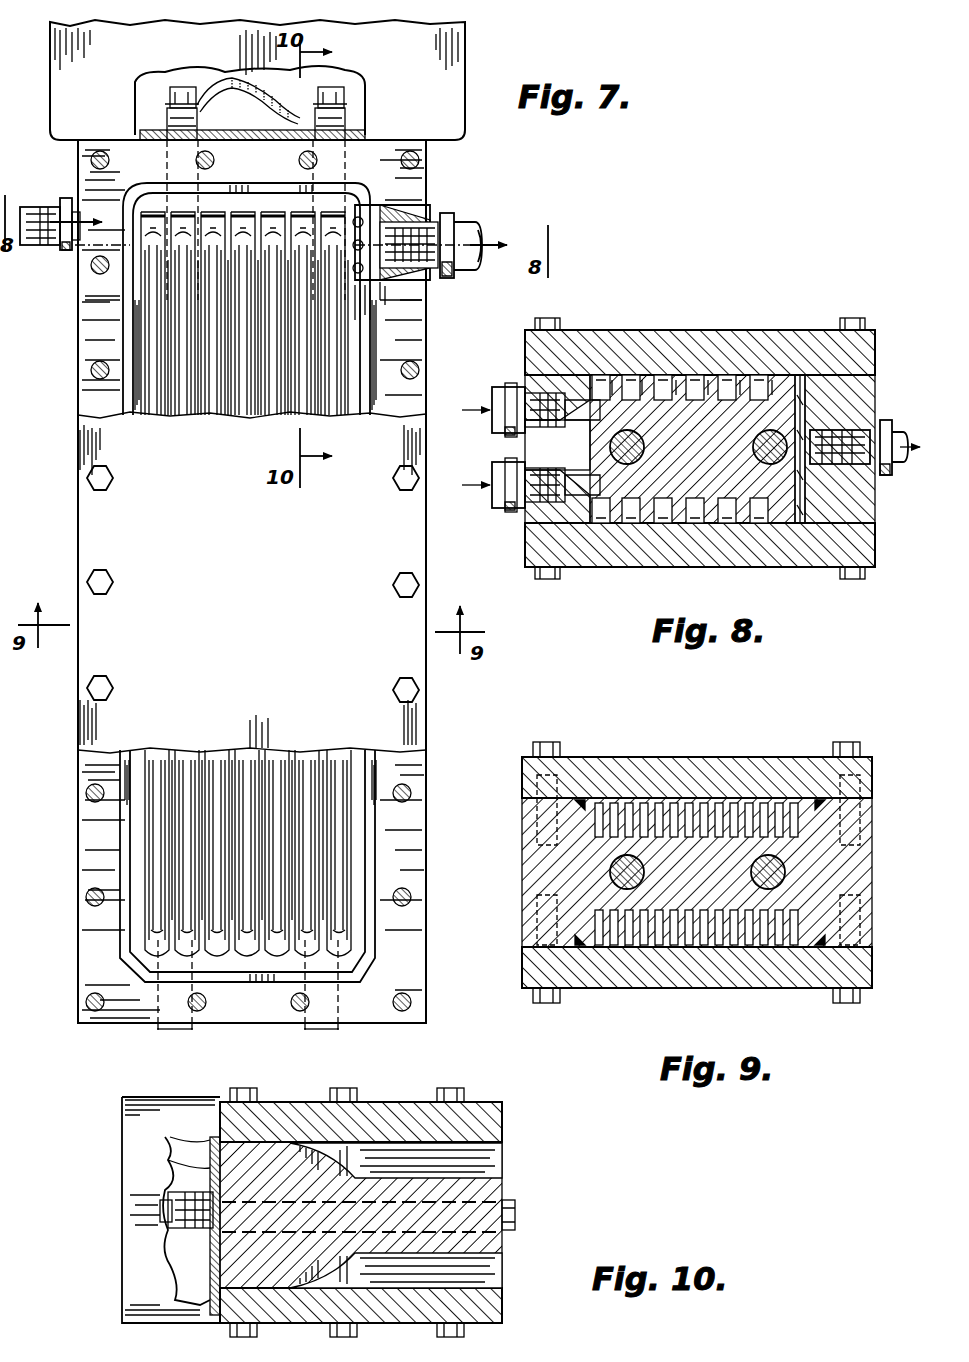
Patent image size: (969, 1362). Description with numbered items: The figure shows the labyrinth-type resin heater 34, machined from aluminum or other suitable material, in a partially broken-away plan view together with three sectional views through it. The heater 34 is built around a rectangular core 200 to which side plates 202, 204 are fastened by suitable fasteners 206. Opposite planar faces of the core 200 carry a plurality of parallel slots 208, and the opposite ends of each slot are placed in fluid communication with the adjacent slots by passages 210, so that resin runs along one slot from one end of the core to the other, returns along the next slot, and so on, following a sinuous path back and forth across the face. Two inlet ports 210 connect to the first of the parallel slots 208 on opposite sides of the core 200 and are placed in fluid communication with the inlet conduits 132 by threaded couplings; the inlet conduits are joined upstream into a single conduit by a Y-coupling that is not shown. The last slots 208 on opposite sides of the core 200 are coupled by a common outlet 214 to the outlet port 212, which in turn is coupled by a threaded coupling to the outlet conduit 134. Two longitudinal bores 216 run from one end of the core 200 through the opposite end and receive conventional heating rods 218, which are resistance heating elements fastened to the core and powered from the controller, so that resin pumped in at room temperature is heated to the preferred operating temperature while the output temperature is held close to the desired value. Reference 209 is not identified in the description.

In FIG. 7, the resin heater 34 is at (440, 183).
In FIG. 8, the resin heater 34 is at (700, 330).
In FIG. 9, the resin heater 34 is at (775, 755).
In FIG. 10, the resin heater 34 is at (490, 1102).
In FIG. 7, the inlet conduits 132 is at (60, 252).
In FIG. 7, the outlet conduit 134 is at (470, 218).
In FIG. 8, the outlet conduit 134 is at (870, 432).
In FIG. 7, the core 200 is at (85, 920).
In FIG. 8, the core 200 is at (690, 430).
In FIG. 9, the core 200 is at (855, 890).
In FIG. 10, the core 200 is at (482, 1242).
In FIG. 7, the side plate 202 is at (278, 616).
In FIG. 8, the side plate 202 is at (720, 348).
In FIG. 9, the side plate 202 is at (705, 775).
In FIG. 10, the side plate 202 is at (482, 1122).
In FIG. 8, the side plate 204 is at (632, 556).
In FIG. 9, the side plate 204 is at (706, 975).
In FIG. 10, the side plate 204 is at (492, 1305).
In FIG. 7, the fasteners 206 is at (98, 578).
In FIG. 8, the fasteners 206 is at (548, 320).
In FIG. 9, the fasteners 206 is at (548, 750).
In FIG. 10, the fasteners 206 is at (248, 1090).
In FIG. 7, the parallel slots 208 is at (185, 365).
In FIG. 8, the parallel slots 208 is at (600, 350).
In FIG. 9, the parallel slots 208 is at (672, 808).
In FIG. 10, the parallel slots 208 is at (492, 1160).
In FIG. 7, the inlet passages 209 is at (110, 215).
In FIG. 8, the inlet passages 209 is at (550, 400).
In FIG. 7, the passages / inlet ports 210 is at (268, 215).
In FIG. 8, the passages / inlet ports 210 is at (652, 385).
In FIG. 10, the passages / inlet ports 210 is at (340, 1152).
In FIG. 7, the outlet port 212 is at (398, 285).
In FIG. 8, the outlet port 212 is at (845, 380).
In FIG. 7, the common outlet 214 is at (388, 232).
In FIG. 8, the common outlet 214 is at (830, 500).
In FIG. 7, the longitudinal bores 216 is at (178, 158).
In FIG. 8, the longitudinal bores 216 is at (775, 382).
In FIG. 9, the longitudinal bores 216 is at (612, 882).
In FIG. 10, the longitudinal bores 216 is at (176, 1150).
In FIG. 7, the heating rods 218 is at (170, 118).
In FIG. 8, the heating rods 218 is at (615, 446).
In FIG. 9, the heating rods 218 is at (615, 875).
In FIG. 10, the heating rods 218 is at (506, 1212).